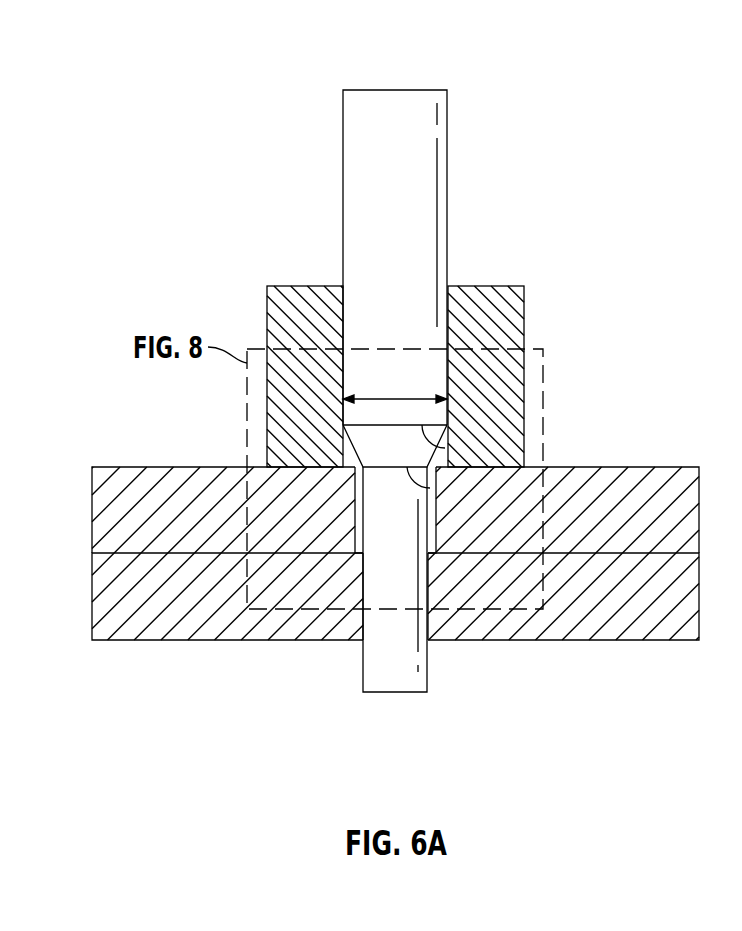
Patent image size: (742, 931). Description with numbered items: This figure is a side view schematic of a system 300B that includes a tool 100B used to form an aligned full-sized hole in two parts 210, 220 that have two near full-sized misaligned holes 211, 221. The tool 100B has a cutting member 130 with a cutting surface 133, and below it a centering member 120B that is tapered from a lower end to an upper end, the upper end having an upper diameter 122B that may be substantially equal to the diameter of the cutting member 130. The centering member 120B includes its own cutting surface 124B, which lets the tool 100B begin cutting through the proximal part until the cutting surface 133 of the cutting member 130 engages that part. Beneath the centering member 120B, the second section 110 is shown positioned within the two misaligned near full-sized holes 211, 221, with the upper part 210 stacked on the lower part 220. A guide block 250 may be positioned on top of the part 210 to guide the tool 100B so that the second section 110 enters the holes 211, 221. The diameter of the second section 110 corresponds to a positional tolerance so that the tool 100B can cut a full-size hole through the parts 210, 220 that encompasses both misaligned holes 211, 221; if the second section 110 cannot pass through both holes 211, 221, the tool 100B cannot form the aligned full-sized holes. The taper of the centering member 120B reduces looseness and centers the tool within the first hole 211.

The system 300B is at (578, 57).
The tool 100B is at (392, 423).
The cutting member 130 is at (342, 118).
The centering member 120B is at (370, 452).
The upper diameter 122B is at (360, 396).
The cutting surface 133 is at (445, 448).
The cutting surface 124B is at (430, 488).
The second section 110 is at (375, 693).
The guide block 250 is at (305, 297).
The part 210 is at (684, 478).
The part 220 is at (670, 628).
The first hole 211 is at (434, 540).
The near full-sized hole 221 is at (360, 603).